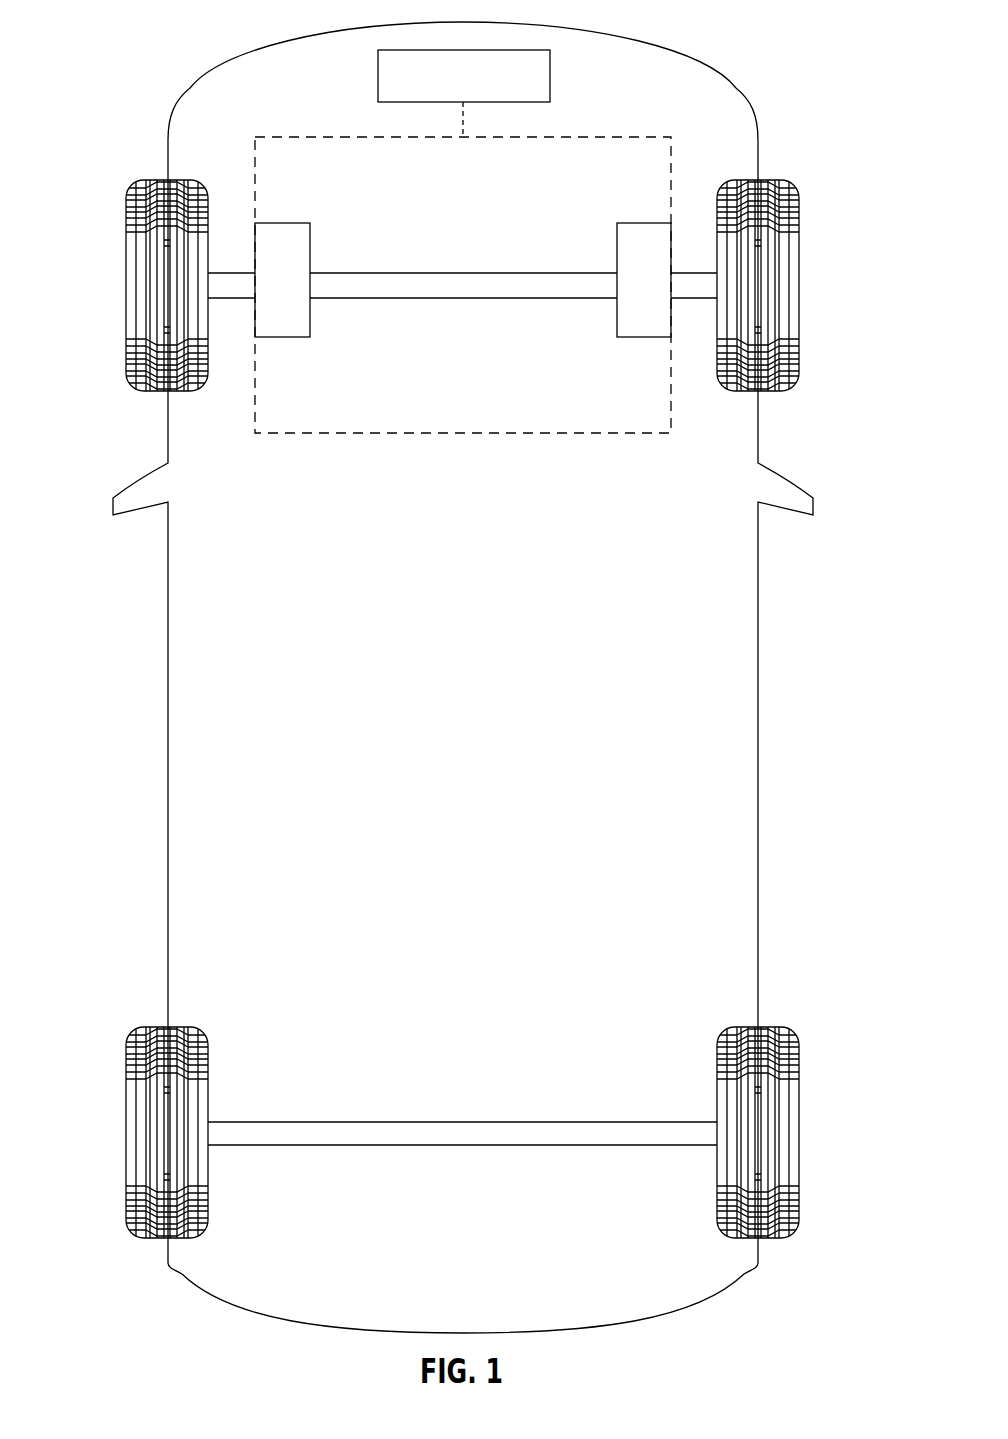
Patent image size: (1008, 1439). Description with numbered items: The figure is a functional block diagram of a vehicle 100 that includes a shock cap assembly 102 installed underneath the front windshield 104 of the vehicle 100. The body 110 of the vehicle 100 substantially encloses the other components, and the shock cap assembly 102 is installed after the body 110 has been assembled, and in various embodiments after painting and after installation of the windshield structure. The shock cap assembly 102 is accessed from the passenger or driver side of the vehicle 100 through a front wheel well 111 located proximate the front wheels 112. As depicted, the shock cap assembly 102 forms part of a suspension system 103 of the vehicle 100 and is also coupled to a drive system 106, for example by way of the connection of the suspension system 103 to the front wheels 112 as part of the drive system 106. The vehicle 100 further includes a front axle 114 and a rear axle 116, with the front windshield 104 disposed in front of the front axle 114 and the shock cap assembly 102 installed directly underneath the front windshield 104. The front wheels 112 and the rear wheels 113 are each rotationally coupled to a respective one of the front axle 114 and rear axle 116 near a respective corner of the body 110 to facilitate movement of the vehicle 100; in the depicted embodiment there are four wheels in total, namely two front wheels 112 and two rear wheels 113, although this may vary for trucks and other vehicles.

The vehicle 100 is at (174, 44).
The shock cap assembly 102 is at (303, 295).
The suspension system 103 is at (499, 229).
The front windshield 104 is at (617, 137).
The drive system 106 is at (377, 78).
The body 110 is at (170, 744).
The front wheel well 111 is at (151, 409).
The front wheels 112 is at (125, 287).
The rear wheels 113 is at (125, 1133).
The front axle 114 is at (247, 300).
The rear axle 116 is at (441, 1124).